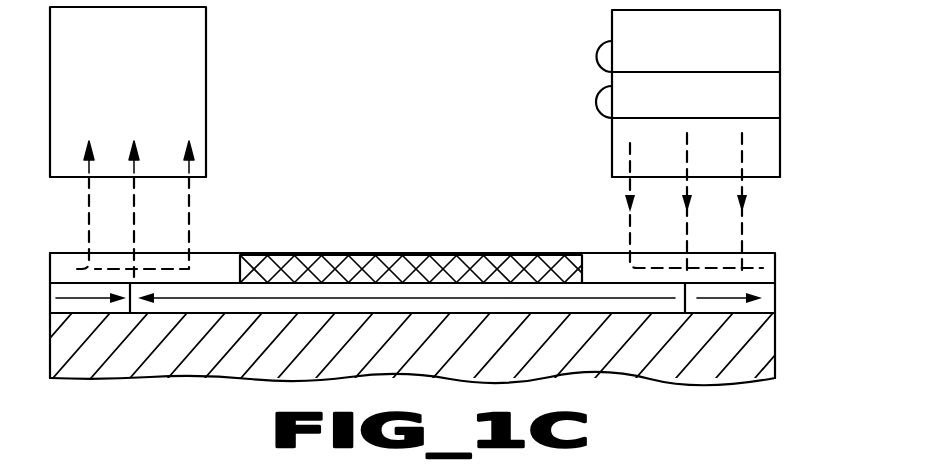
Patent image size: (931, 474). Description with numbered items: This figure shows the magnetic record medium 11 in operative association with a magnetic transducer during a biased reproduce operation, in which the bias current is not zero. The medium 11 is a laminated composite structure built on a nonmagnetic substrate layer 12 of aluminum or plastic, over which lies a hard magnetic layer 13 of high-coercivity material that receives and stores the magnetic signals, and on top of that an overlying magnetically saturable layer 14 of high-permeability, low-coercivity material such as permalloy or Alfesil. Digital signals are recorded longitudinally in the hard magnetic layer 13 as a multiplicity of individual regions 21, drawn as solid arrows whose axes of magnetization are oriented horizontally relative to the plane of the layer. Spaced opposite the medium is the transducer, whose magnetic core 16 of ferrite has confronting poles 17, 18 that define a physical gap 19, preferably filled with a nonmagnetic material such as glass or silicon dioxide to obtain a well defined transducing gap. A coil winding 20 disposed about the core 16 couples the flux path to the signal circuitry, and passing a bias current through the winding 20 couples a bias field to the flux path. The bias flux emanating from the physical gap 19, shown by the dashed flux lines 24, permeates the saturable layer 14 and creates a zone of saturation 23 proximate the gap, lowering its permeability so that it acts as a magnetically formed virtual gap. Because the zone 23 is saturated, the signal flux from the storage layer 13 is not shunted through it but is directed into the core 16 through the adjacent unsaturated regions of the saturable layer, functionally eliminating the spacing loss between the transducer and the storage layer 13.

The magnetic record medium 11 is at (300, 247).
The substrate layer 12 is at (165, 378).
The hard magnetic layer 13 is at (603, 292).
The magnetically saturable layer 14 is at (205, 270).
The magnetic core 16 is at (145, 92).
The pole 17 is at (612, 177).
The pole 18 is at (197, 177).
The physical gap 19 is at (396, 112).
The coil winding 20 is at (597, 56).
The individual regions 21 is at (672, 305).
The zone of saturation 23 is at (428, 260).
The magnetic flux lines 24 is at (190, 233).